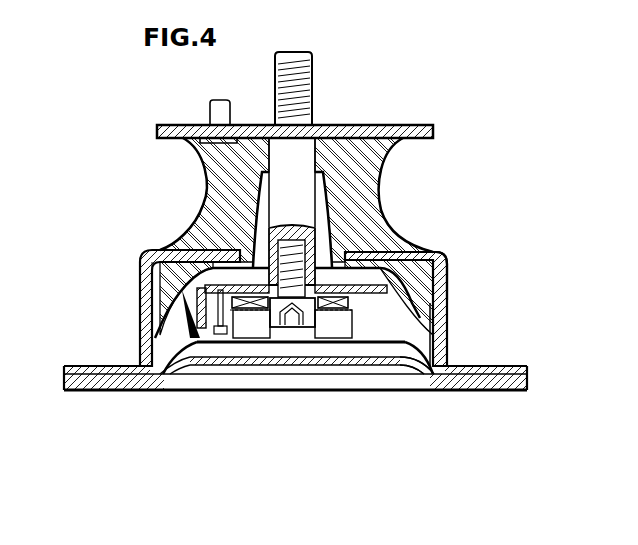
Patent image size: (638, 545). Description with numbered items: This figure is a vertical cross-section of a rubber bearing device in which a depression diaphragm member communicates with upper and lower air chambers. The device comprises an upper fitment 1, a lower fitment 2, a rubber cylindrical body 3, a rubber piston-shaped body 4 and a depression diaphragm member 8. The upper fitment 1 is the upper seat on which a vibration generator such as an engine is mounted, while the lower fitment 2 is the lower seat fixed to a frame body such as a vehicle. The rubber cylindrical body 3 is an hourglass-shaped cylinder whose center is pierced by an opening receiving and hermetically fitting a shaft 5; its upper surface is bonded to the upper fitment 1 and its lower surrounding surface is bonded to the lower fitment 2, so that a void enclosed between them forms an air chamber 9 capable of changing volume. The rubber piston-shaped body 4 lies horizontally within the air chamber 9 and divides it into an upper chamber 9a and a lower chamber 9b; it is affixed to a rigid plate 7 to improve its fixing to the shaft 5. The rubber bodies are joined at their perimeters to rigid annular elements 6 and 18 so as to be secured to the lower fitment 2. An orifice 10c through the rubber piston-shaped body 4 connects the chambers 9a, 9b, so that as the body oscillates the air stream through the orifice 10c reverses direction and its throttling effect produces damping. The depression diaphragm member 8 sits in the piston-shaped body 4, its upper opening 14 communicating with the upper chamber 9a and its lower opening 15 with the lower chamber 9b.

The upper fitment 1 is at (363, 125).
The lower fitment 2 is at (456, 391).
The rubber cylindrical body 3 is at (360, 173).
The rubber piston-shaped body 4 is at (407, 330).
The shaft or rod 5 is at (313, 85).
The rigid annular element 6 is at (147, 250).
The rigid plate 7 is at (380, 283).
The depression diaphragm member 8 is at (257, 316).
The air chamber 9 is at (243, 358).
The upper chamber 9a is at (355, 283).
The lower chamber 9b is at (368, 354).
The orifice 10c is at (180, 297).
The upper opening 14 is at (432, 302).
The lower opening 15 is at (328, 340).
The rigid annular element 18 is at (152, 333).